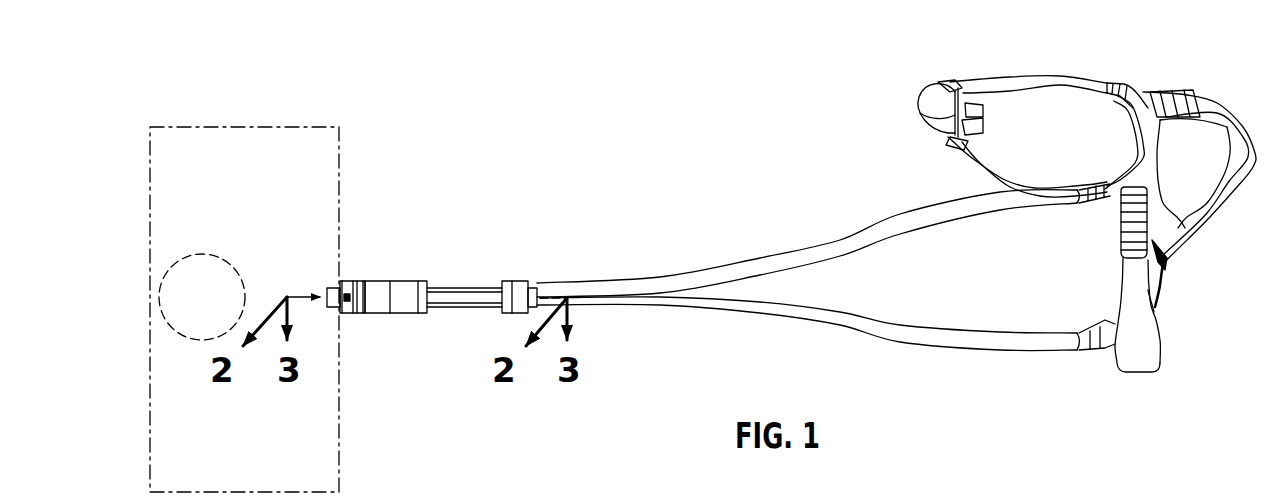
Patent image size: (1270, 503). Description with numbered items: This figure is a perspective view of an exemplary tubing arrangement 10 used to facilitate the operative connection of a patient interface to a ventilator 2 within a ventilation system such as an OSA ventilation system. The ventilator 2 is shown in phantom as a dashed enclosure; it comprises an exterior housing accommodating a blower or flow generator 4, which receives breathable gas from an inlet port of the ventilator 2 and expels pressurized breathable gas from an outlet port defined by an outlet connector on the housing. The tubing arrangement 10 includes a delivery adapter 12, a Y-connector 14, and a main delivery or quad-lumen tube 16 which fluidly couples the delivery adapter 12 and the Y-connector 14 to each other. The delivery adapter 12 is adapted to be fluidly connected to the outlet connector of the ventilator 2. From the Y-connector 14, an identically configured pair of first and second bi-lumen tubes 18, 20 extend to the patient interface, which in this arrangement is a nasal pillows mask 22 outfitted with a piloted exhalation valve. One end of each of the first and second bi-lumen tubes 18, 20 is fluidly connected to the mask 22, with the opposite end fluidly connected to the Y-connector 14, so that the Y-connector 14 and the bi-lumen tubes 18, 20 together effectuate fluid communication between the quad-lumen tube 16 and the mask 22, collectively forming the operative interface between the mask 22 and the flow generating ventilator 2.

The ventilator 2 is at (310, 112).
The flow generator 4 is at (203, 262).
The tubing arrangement 10 is at (989, 195).
The delivery adapter 12 is at (381, 268).
The Y-connector 14 is at (516, 270).
The quad-lumen tube 16 is at (457, 277).
The first bi-lumen tube 18 is at (806, 234).
The second bi-lumen tube 20 is at (762, 319).
The nasal pillows mask 22 is at (942, 66).